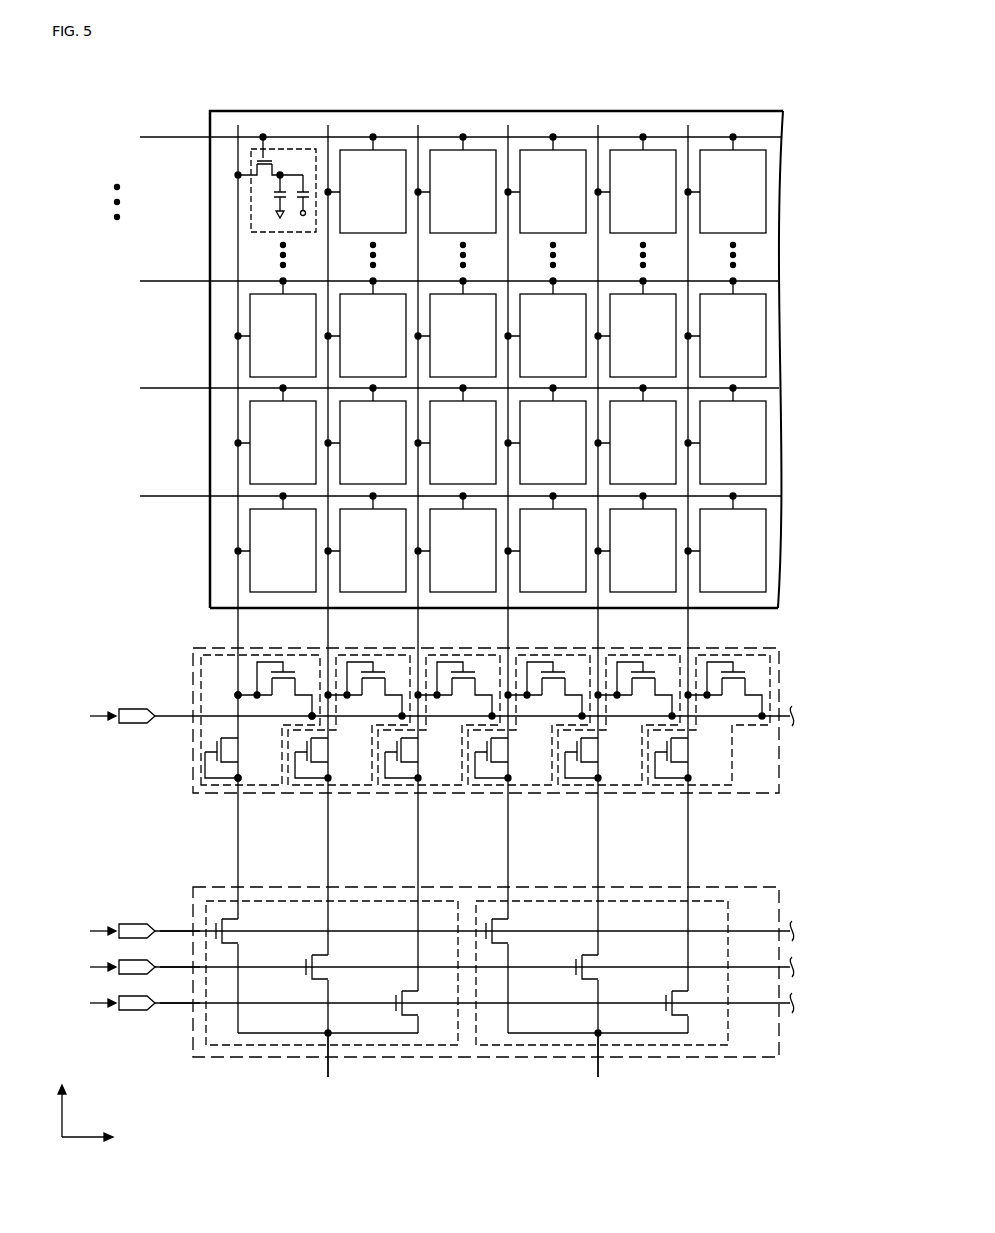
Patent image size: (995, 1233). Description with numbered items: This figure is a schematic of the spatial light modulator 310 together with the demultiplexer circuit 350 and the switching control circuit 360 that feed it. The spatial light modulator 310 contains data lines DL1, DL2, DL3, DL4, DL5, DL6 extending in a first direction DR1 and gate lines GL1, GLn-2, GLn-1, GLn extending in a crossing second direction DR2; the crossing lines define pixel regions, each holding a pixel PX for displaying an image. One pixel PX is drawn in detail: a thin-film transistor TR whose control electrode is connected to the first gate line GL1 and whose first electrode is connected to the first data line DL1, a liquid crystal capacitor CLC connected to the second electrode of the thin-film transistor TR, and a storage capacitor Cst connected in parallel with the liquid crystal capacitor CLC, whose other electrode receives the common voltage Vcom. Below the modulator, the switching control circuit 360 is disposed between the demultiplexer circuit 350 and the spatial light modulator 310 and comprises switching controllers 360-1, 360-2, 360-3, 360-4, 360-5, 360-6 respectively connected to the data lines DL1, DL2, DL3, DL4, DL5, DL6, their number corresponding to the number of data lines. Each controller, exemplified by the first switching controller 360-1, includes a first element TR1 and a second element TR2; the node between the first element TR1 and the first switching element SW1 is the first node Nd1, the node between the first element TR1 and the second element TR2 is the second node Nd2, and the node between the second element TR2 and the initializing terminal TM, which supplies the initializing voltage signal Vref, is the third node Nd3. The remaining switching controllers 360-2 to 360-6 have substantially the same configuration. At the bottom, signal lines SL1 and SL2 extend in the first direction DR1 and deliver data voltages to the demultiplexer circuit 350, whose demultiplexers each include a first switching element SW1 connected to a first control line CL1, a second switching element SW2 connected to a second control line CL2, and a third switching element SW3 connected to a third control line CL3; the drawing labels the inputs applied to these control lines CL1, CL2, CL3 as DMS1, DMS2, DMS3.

The spatial light modulator 310 is at (713, 111).
The switching control circuit 360 is at (757, 793).
The first switching controller 360-1 is at (200, 745).
The second switching controller 360-2 is at (346, 788).
The third switching controller 360-3 is at (436, 788).
The fourth switching controller 360-4 is at (526, 788).
The fifth switching controller 360-5 is at (616, 788).
The sixth switching controller 360-6 is at (706, 788).
The demultiplexer circuit 350 is at (736, 1058).
The pixel PX is at (251, 164).
The thin-film transistor TR is at (264, 180).
The storage capacitor Cst is at (268, 196).
The liquid crystal capacitor CLC is at (310, 185).
The common voltage Vcom is at (306, 225).
The first gate line GL1 is at (444, 137).
The gate line GLn-2 is at (430, 281).
The gate line GLn-1 is at (431, 388).
The nth gate line GLn is at (442, 496).
The first data line DL1 is at (254, 579).
The second data line DL2 is at (344, 601).
The third data line DL3 is at (434, 579).
The fourth data line DL4 is at (524, 579).
The fifth data line DL5 is at (614, 601).
The sixth data line DL6 is at (704, 579).
The initializing voltage signal Vref is at (418, 716).
The initializing terminal TM is at (131, 724).
The first element TR1 is at (235, 759).
The second element TR2 is at (275, 690).
The first node Nd1 is at (236, 780).
The second node Nd2 is at (236, 694).
The third node Nd3 is at (308, 717).
The first demultiplexer control signal DMS1 is at (418, 931).
The second demultiplexer control signal DMS2 is at (418, 967).
The third demultiplexer control signal DMS3 is at (418, 1003).
The first control line CL1 is at (165, 930).
The second control line CL2 is at (165, 968).
The third control line CL3 is at (175, 1003).
The first switching element SW1 is at (246, 926).
The second switching element SW2 is at (336, 962).
The third switching element SW3 is at (426, 997).
The first signal line SL1 is at (325, 1065).
The second signal line SL2 is at (595, 1065).
The first direction DR1 is at (61, 1102).
The second direction DR2 is at (103, 1137).